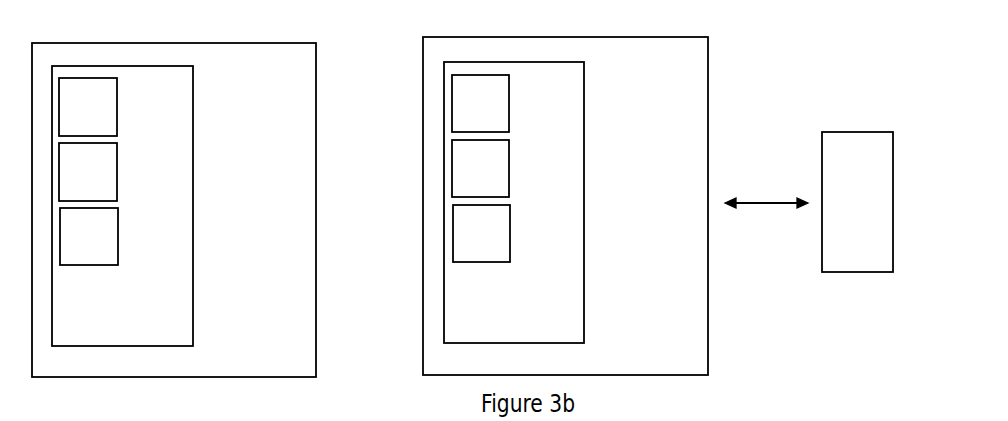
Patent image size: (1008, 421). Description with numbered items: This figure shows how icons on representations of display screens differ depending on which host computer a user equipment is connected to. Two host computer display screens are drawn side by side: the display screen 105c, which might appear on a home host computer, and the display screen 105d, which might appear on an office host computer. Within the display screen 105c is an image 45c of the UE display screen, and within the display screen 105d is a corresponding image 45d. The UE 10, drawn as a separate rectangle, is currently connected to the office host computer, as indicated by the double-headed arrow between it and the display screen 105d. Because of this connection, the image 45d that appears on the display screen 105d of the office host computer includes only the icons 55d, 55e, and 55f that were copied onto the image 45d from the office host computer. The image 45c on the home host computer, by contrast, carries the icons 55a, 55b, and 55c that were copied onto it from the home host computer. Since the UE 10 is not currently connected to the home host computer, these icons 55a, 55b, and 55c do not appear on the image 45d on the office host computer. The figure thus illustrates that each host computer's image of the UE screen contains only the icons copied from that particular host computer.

The UE 10 is at (857, 272).
The image 45c is at (194, 220).
The image 45d is at (585, 217).
The icon 55a is at (117, 88).
The icon 55b is at (117, 153).
The icon 55c is at (118, 222).
The icon 55d is at (509, 85).
The icon 55e is at (509, 150).
The icon 55f is at (510, 218).
The display screen 105c is at (316, 319).
The display screen 105d is at (708, 315).